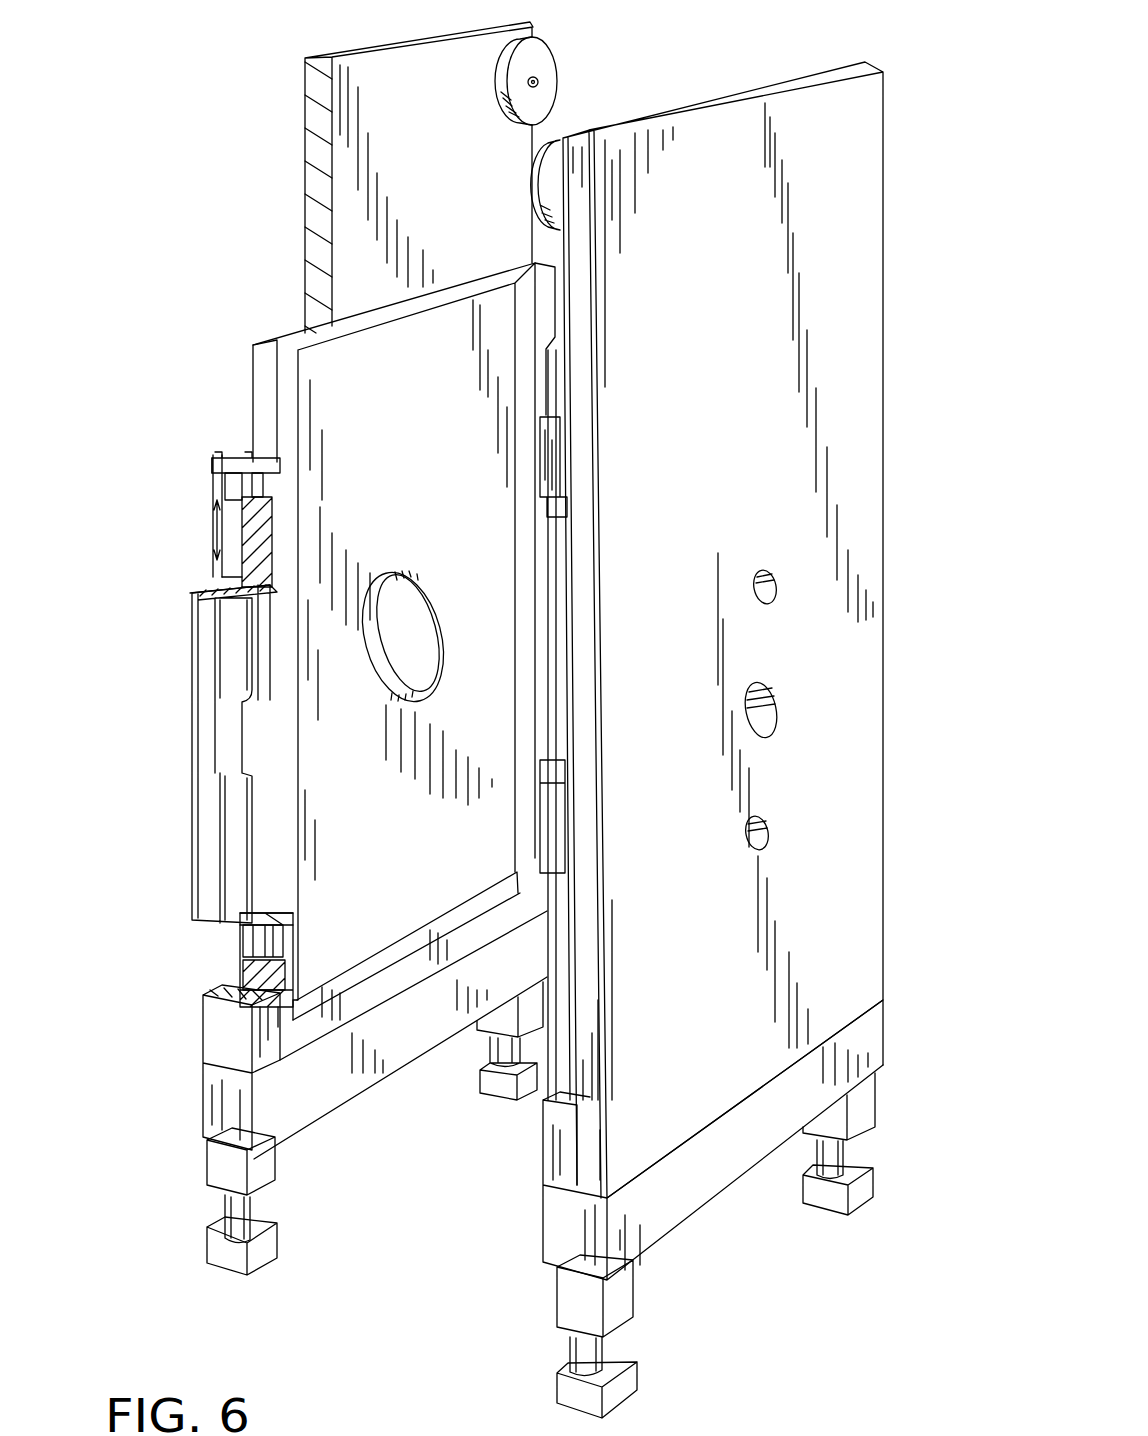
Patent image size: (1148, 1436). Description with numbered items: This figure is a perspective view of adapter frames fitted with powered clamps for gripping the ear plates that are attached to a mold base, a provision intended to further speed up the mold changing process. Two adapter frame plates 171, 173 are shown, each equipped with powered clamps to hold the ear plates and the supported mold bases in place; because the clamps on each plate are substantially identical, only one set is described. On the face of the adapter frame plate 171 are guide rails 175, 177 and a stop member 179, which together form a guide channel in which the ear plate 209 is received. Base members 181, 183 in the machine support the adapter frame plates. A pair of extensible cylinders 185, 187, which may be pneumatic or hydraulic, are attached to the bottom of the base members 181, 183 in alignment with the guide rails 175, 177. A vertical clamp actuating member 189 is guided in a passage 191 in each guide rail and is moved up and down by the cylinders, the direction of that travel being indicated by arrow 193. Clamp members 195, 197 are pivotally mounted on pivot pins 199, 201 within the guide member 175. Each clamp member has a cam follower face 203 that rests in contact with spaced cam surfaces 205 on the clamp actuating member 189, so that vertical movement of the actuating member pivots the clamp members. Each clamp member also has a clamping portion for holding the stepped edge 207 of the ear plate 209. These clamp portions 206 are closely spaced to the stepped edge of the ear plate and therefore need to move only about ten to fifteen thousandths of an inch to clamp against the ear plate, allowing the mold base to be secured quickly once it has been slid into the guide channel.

The adapter frame plate 171 is at (447, 186).
The adapter frame plate 173 is at (772, 278).
The guide rail 175 is at (225, 740).
The guide rail 177 is at (528, 305).
The stop member 179 is at (455, 935).
The base member 181 is at (210, 1095).
The base member 183 is at (718, 1163).
The extensible cylinder 185 is at (215, 1178).
The extensible cylinder 187 is at (858, 1110).
The clamp actuating member 189 is at (225, 470).
The passage 191 is at (195, 598).
The arrow 193 is at (230, 580).
The clamp member 195 is at (222, 486).
The clamp member 197 is at (240, 950).
The pivot pin 199 is at (250, 455).
The pivot pin 201 is at (285, 920).
The cam follower face 203 is at (272, 540).
The cam surface 205 is at (225, 525).
The clamp portion 206 is at (278, 492).
The stepped edge 207 is at (268, 355).
The ear plate 209 is at (455, 438).